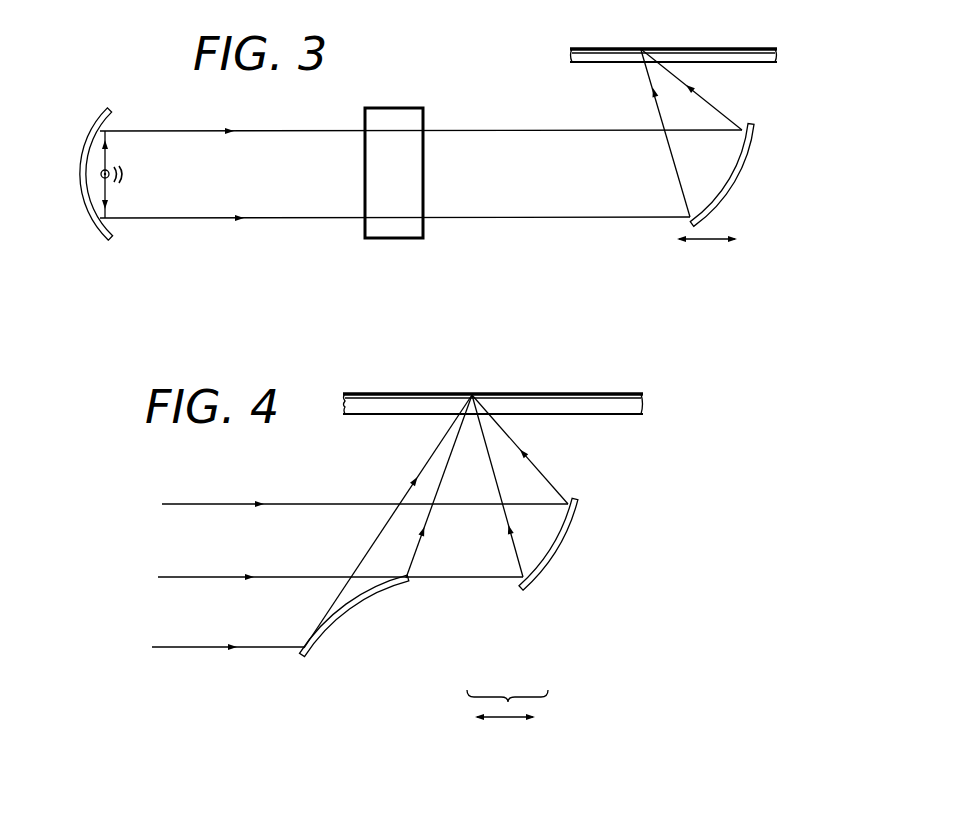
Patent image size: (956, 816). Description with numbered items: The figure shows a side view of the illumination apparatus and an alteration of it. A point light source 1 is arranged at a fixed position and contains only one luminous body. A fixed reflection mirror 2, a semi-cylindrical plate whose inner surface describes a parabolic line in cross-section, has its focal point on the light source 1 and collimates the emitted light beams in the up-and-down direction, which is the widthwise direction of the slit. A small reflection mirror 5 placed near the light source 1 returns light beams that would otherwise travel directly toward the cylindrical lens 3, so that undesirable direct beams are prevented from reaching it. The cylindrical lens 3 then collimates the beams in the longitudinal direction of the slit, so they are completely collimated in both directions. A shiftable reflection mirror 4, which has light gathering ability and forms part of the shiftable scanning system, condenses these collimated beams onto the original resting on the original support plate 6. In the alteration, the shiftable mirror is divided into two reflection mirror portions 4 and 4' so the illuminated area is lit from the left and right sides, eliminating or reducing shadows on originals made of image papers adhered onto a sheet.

In FIG. 3, the point light source 1 is at (100, 175).
In FIG. 3, the fixed reflection mirror 2 is at (111, 112).
In FIG. 3, the cylindrical lens 3 is at (410, 107).
In FIG. 3, the shiftable reflection mirror 4 is at (733, 175).
In FIG. 4, the shiftable reflection mirror 4 is at (551, 552).
In FIG. 4, the reflection mirror portion 4' is at (368, 616).
In FIG. 3, the small reflection mirror 5 is at (124, 171).
In FIG. 3, the original support plate 6 is at (779, 54).
In FIG. 4, the original support plate 6 is at (646, 406).